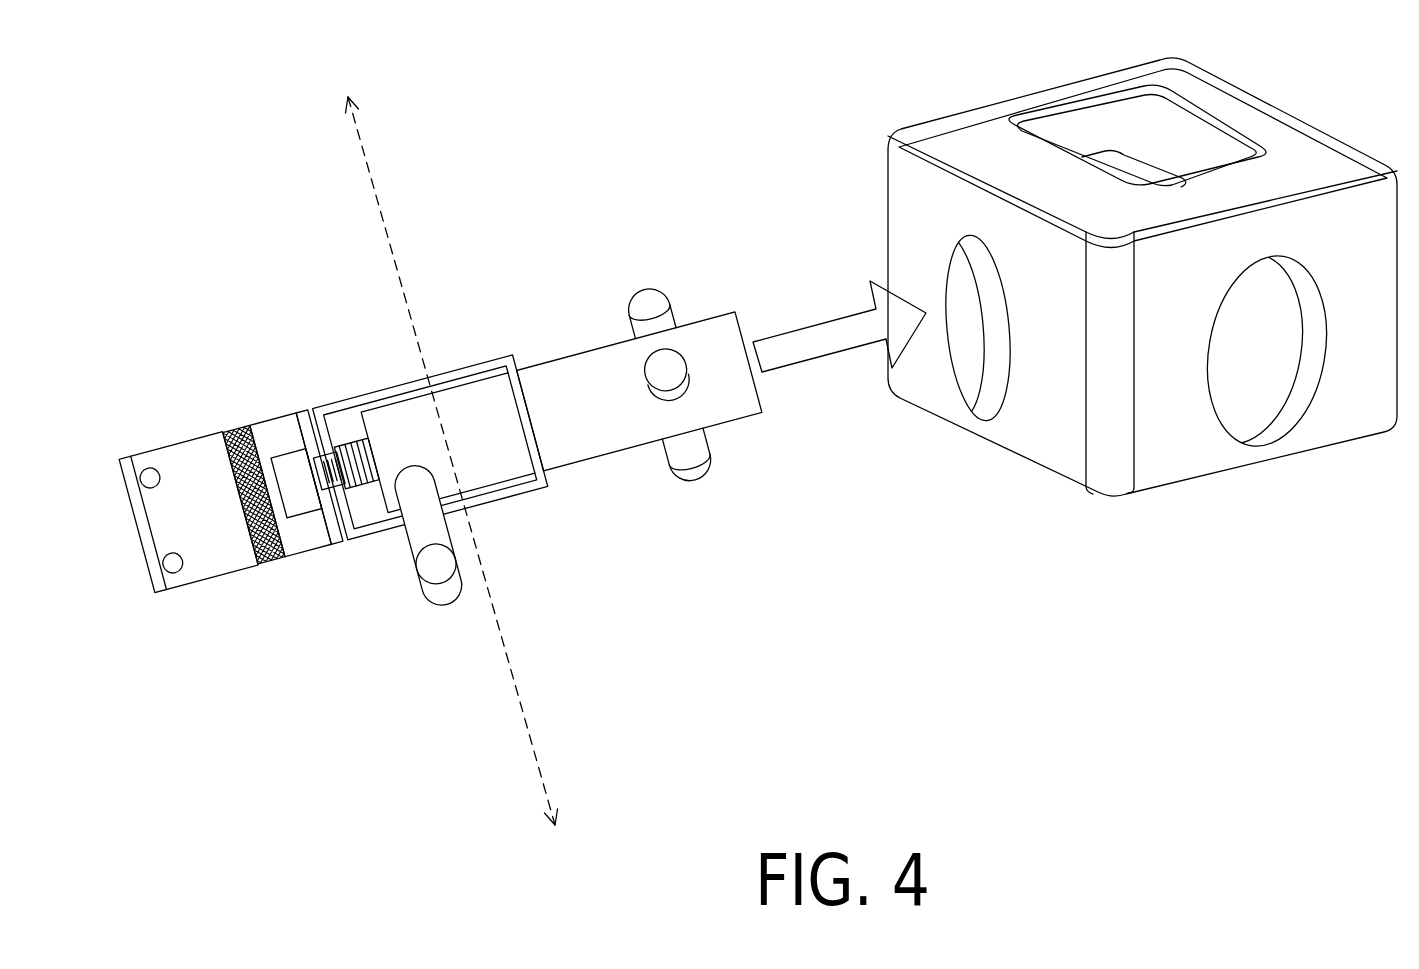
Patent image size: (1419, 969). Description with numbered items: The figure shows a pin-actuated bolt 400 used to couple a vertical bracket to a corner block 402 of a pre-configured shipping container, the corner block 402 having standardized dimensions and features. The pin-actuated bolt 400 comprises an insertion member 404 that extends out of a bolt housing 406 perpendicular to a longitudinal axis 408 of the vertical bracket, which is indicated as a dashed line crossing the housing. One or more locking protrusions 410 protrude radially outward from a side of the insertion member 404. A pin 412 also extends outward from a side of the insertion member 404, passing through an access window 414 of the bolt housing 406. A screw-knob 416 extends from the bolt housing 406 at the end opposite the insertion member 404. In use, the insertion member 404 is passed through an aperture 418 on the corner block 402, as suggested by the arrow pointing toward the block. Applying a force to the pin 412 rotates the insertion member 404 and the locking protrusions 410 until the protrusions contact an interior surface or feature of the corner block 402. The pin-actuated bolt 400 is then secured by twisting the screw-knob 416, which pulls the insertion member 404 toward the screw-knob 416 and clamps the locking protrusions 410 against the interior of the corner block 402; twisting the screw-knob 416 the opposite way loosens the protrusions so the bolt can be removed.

The pin-actuated bolt 400 is at (147, 127).
The corner block 402 is at (844, 74).
The insertion member 404 is at (728, 413).
The bolt housing 406 is at (485, 362).
The longitudinal axis 408 is at (393, 257).
The locking protrusions 410 is at (657, 298).
The pin 412 is at (437, 593).
The access window 414 is at (372, 520).
The screw-knob 416 is at (249, 562).
The aperture 418 is at (976, 395).